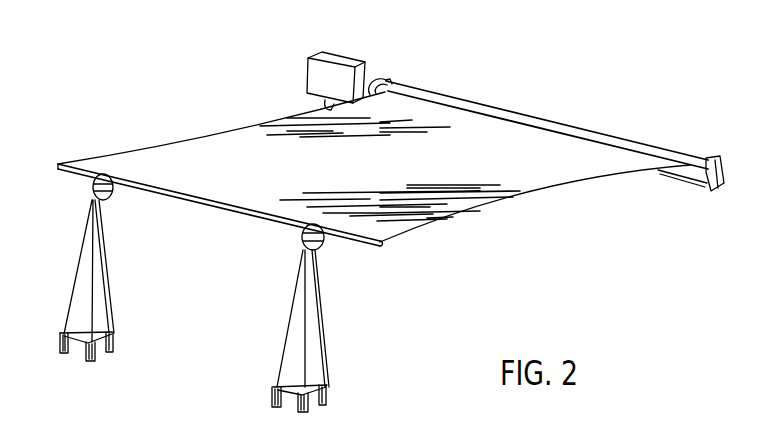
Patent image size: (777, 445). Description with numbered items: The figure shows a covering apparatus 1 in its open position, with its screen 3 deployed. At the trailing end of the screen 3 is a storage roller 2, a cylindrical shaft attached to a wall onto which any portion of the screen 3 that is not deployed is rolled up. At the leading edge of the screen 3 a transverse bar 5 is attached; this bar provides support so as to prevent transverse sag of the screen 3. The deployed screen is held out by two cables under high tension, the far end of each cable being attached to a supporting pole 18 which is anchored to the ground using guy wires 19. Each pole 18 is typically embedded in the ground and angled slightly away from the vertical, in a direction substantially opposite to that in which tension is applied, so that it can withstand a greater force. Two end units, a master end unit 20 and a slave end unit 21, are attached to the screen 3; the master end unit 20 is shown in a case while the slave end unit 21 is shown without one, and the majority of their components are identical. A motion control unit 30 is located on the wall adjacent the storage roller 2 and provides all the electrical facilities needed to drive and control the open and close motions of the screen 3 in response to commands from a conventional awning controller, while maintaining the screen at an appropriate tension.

The covering apparatus 1 is at (510, 90).
The storage roller 2 is at (652, 147).
The screen 3 is at (463, 209).
The transverse bar 5 is at (60, 163).
The supporting pole 18 is at (110, 306).
The guy wires 19 is at (90, 302).
The master end unit 20 is at (110, 203).
The slave end unit 21 is at (317, 247).
The motion control unit 30 is at (320, 54).